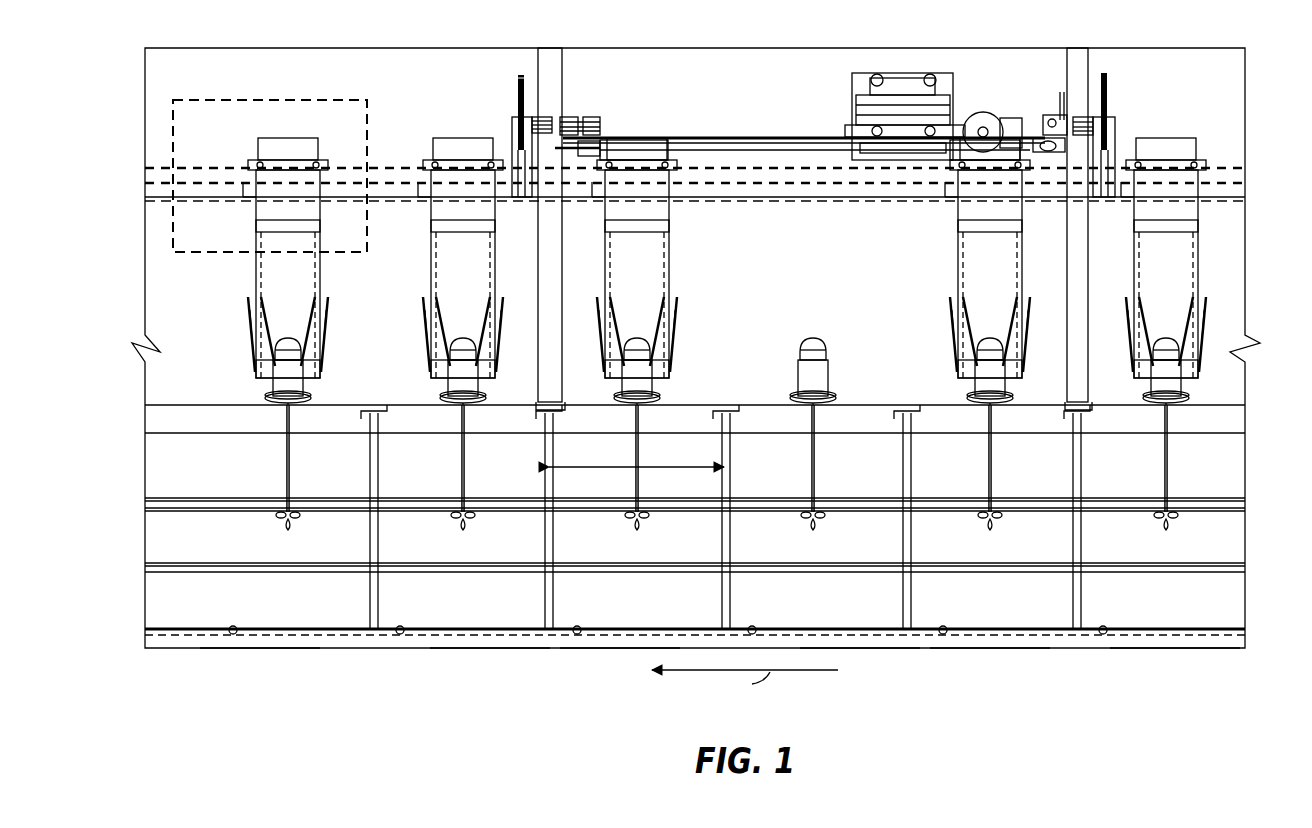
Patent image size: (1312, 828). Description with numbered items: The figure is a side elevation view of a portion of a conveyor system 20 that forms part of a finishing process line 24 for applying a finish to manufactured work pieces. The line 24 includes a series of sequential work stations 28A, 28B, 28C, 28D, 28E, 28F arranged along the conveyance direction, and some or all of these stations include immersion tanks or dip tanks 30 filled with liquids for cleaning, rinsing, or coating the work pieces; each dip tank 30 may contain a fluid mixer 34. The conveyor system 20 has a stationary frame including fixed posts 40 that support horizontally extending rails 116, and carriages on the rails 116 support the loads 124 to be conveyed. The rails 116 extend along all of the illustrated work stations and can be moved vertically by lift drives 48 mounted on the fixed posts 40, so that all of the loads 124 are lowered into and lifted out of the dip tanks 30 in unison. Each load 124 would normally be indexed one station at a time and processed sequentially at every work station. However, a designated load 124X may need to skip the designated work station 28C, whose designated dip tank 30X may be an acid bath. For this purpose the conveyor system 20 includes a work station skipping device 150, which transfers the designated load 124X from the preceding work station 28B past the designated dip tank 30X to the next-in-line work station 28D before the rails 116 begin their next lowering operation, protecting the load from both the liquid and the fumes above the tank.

The conveyor system 20 is at (1225, 160).
The finishing process line 24 is at (237, 36).
The work station 28A is at (1174, 654).
The work station 28B is at (994, 654).
The work station 28C is at (864, 654).
The work station 28D is at (619, 654).
The work station 28E is at (485, 654).
The work station 28F is at (253, 654).
The dip tank 30 is at (256, 557).
The designated dip tank 30X is at (826, 617).
The fluid mixer 34 is at (287, 480).
The fixed post 40 is at (550, 89).
The lift drive 48 is at (522, 130).
The rail 116 is at (748, 196).
The load 124 is at (668, 264).
The designated load 124X is at (957, 262).
The work station skipping device 150 is at (803, 129).